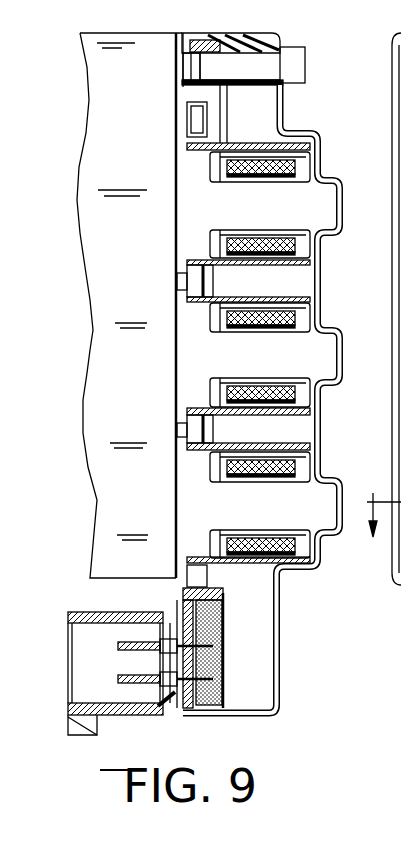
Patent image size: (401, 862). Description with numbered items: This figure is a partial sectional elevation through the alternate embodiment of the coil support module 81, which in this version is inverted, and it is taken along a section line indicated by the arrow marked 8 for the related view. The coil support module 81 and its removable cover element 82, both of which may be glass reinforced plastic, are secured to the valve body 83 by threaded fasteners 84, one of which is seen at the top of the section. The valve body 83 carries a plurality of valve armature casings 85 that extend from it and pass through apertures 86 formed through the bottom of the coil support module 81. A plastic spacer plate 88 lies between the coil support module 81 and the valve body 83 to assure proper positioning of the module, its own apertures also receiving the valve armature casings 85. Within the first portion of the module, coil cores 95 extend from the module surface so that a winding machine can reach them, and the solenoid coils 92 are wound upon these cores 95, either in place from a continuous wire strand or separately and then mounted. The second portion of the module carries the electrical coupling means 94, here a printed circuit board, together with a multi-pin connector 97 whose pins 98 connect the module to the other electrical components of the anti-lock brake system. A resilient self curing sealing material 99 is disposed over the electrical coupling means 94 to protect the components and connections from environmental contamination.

The section view indicator (FIG. 8 viewing direction) 8 is at (382, 533).
The coil support module 81 is at (180, 80).
The cover element 82 is at (253, 47).
The valve body 83 is at (107, 112).
The threaded fasteners 84 is at (276, 66).
The valve armature casings 85 is at (318, 196).
The apertures 86 is at (218, 226).
The spacer plate 88 is at (195, 117).
The solenoid coils 92 is at (282, 172).
The electrical coupling means 94 is at (217, 713).
The coil cores 95 is at (305, 305).
The multi-pin connector 97 is at (162, 714).
The pins 98 is at (128, 646).
The sealing material 99 is at (217, 685).